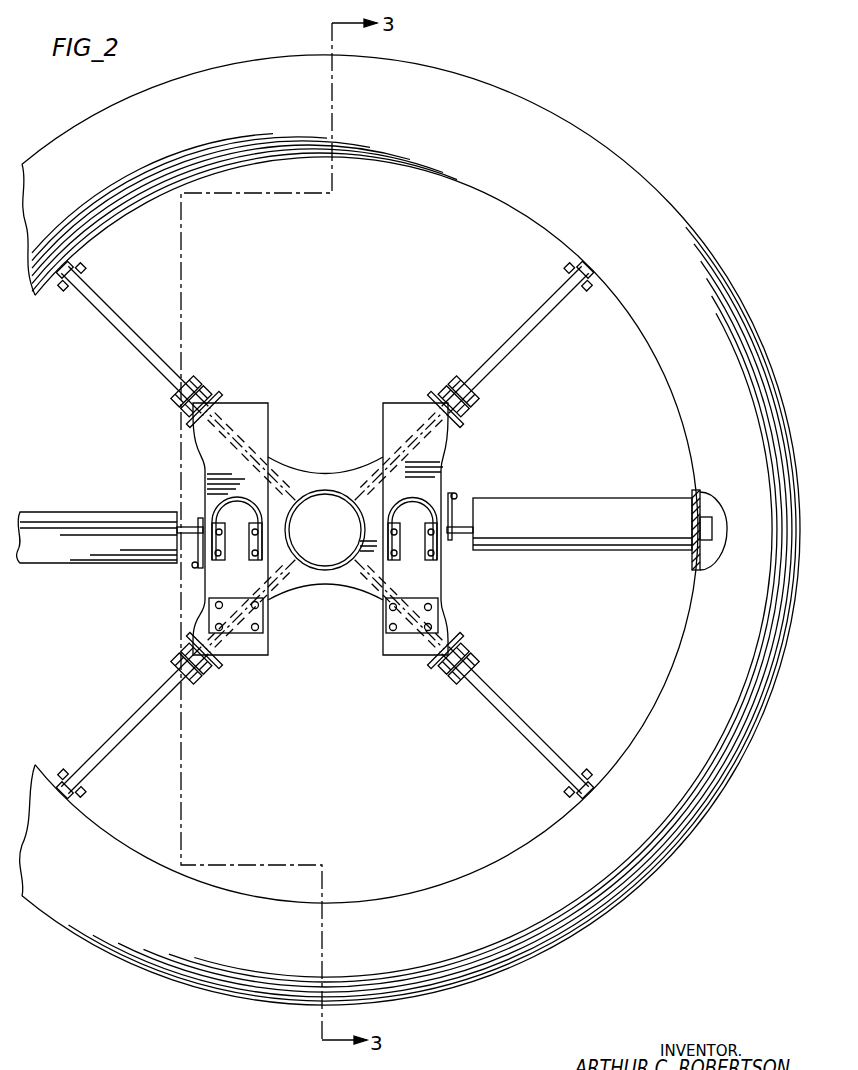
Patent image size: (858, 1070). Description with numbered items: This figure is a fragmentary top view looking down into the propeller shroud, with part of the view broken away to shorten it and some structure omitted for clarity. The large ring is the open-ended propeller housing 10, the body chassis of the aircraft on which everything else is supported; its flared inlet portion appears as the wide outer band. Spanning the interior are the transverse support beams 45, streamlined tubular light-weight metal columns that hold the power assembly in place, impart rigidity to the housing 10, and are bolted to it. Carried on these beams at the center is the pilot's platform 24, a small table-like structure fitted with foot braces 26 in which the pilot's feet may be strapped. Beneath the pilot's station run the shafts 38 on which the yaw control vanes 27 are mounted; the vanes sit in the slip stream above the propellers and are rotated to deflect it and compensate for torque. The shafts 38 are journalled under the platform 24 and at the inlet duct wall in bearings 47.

The propeller housing 10 is at (603, 144).
The transverse support beams 45 is at (504, 368).
The pilot's platform 24 is at (443, 445).
The foot braces 26 is at (432, 543).
The shafts 38 is at (190, 527).
The yaw control vanes 27 is at (520, 509).
The bearings 47 is at (706, 520).